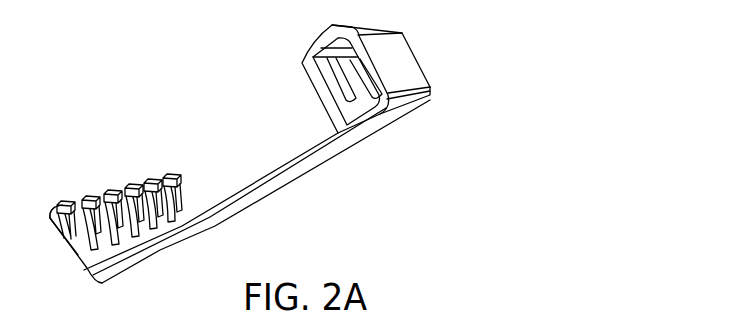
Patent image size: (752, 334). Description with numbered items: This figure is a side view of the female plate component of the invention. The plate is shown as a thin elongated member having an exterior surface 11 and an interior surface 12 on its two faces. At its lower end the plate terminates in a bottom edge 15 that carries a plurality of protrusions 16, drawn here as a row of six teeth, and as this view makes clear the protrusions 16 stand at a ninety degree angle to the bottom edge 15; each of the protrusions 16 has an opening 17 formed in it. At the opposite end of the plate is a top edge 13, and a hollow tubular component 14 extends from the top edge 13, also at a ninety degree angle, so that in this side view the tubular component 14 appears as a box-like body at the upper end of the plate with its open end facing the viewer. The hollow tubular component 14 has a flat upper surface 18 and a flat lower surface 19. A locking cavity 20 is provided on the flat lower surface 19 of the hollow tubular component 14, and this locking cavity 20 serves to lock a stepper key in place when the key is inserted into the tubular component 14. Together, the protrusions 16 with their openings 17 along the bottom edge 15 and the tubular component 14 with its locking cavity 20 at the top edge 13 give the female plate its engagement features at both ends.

The exterior surface 11 is at (258, 206).
The interior surface 12 is at (245, 182).
The top edge 13 is at (394, 113).
The hollow tubular component 14 is at (316, 40).
The bottom edge 15 is at (93, 281).
The protrusions 16 is at (58, 198).
The opening 17 is at (80, 258).
The flat upper surface 18 is at (418, 59).
The flat lower surface 19 is at (330, 96).
The locking cavity 20 is at (350, 100).